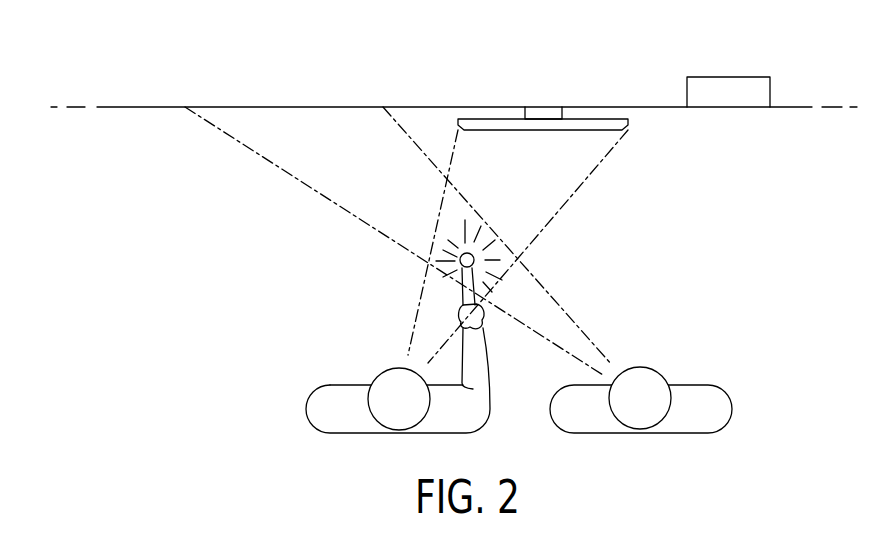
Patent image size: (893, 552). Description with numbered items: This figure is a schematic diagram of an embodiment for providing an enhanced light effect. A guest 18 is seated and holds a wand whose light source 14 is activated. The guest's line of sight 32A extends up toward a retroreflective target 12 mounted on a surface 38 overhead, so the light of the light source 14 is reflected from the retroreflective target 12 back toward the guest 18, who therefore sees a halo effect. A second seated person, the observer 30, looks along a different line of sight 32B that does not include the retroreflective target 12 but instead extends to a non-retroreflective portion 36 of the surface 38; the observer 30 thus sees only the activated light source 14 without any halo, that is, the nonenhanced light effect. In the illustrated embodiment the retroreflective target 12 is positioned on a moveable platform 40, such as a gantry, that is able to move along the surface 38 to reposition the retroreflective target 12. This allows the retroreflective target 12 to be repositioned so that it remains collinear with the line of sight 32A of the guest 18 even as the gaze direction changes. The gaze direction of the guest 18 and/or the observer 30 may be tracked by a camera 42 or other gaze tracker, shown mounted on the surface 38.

The retroreflective target 12 is at (610, 133).
The light source 14 is at (462, 252).
The guest 18 is at (323, 448).
The observer 30 is at (700, 447).
The line of sight 32A is at (567, 192).
The line of sight 32B is at (335, 187).
The non-retroreflective portion 36 is at (143, 107).
The surface 38 is at (650, 107).
The moveable platform 40 is at (538, 109).
The camera 42 is at (720, 77).